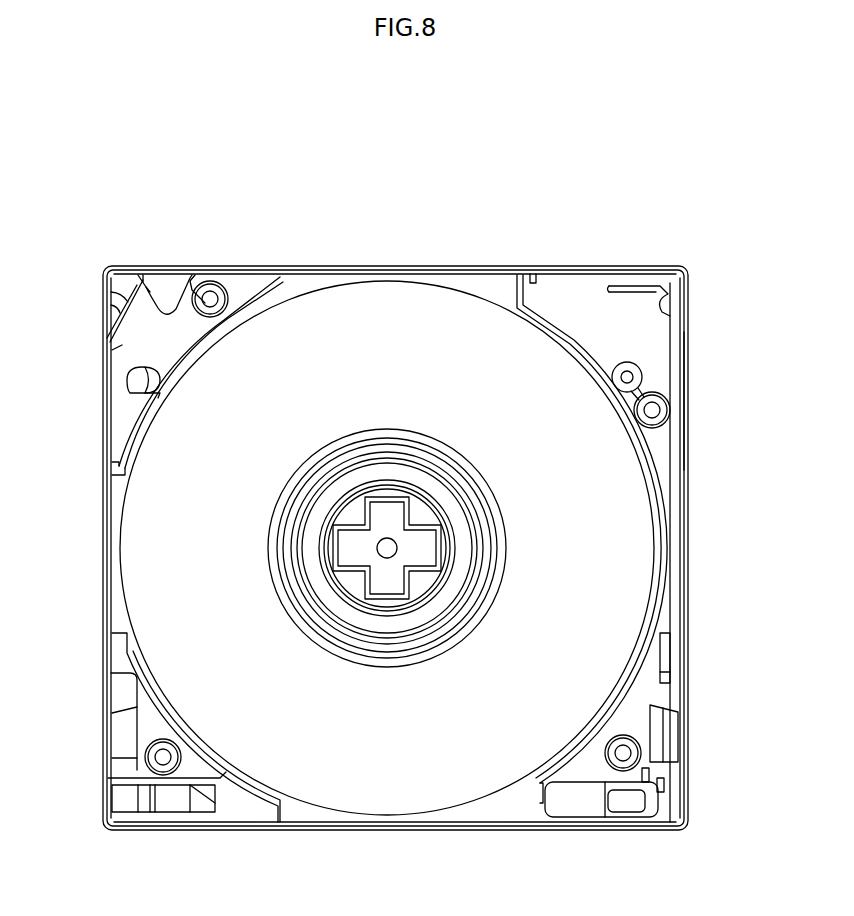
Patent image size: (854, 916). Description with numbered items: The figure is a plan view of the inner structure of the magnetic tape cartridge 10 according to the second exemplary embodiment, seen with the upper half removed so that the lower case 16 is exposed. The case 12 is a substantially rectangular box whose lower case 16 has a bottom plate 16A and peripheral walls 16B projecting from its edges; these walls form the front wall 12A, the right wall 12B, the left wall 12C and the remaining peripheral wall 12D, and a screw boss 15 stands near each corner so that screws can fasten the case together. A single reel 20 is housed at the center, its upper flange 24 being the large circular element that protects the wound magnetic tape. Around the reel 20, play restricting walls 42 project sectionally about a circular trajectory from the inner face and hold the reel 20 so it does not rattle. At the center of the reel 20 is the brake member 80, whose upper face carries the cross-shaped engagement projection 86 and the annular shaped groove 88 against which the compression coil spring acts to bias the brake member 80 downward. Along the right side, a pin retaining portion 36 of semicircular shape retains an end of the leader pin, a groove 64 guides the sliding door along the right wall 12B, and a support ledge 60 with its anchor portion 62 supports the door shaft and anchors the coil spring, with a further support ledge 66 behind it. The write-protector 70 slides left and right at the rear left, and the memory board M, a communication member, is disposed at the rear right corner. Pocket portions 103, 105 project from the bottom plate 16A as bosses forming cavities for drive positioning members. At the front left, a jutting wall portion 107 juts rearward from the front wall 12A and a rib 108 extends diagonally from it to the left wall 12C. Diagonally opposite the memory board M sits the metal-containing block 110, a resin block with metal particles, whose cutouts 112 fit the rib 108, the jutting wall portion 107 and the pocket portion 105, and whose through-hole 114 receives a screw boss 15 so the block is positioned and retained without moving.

The magnetic tape cartridge 10 is at (604, 189).
The case 12 is at (395, 549).
The front wall 12A is at (365, 268).
The right wall 12B is at (686, 512).
The left wall 12C is at (104, 548).
The bottom side wall 12D is at (400, 832).
The screw boss 15 is at (225, 293).
The lower case 16 is at (395, 541).
The bottom plate 16A is at (560, 290).
The peripheral wall 16B is at (395, 549).
The reel 20 is at (425, 521).
The upper flange 24 is at (625, 590).
The pin retaining portion 36 is at (666, 305).
The play restricting wall 42 is at (255, 315).
The support ledge 60 is at (670, 655).
The anchor portion 62 is at (670, 678).
The groove 64 is at (684, 352).
The support ledge 66 is at (668, 745).
The write-protector 70 is at (173, 800).
The brake member 80 is at (400, 542).
The engagement projection 86 is at (430, 515).
The annular shaped groove 88 is at (357, 515).
The pocket portion 103 is at (627, 361).
The pocket portion 105 is at (130, 380).
The jutting wall portion 107 is at (198, 288).
The rib 108 is at (110, 300).
The metal-containing block 110 is at (131, 348).
The cutout 112 is at (150, 278).
The through-hole 114 is at (211, 282).
The memory board M is at (588, 800).